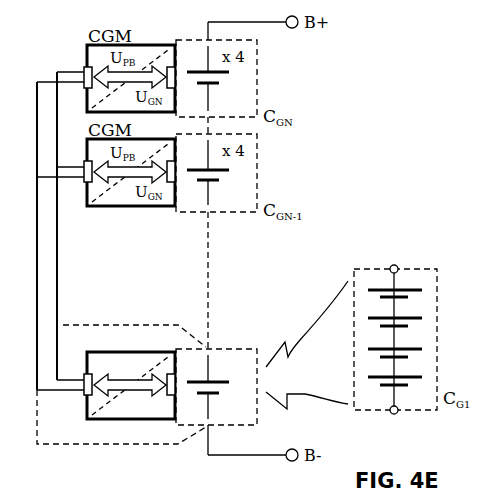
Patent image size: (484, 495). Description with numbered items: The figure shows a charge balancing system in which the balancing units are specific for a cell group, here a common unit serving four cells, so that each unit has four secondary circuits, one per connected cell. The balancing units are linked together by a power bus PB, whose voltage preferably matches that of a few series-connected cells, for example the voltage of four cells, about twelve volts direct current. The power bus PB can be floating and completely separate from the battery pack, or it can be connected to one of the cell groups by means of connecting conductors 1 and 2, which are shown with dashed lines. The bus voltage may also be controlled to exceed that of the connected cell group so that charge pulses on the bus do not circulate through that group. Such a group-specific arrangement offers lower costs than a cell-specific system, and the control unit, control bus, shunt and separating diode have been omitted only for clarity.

The connecting conductor 1 is at (100, 323).
The connecting conductor 2 is at (35, 438).
The power bus PB is at (68, 245).